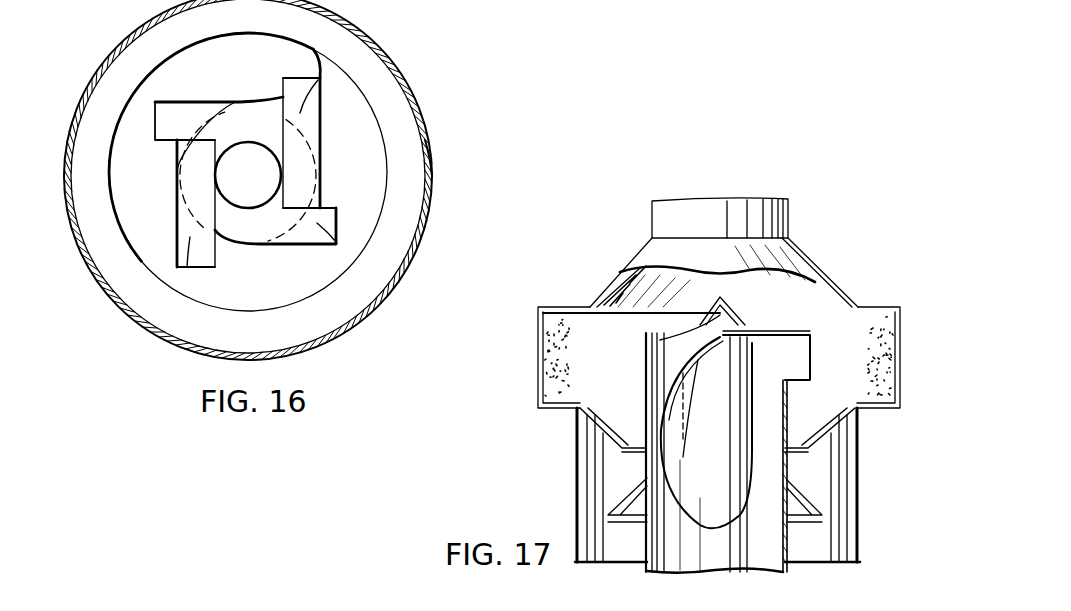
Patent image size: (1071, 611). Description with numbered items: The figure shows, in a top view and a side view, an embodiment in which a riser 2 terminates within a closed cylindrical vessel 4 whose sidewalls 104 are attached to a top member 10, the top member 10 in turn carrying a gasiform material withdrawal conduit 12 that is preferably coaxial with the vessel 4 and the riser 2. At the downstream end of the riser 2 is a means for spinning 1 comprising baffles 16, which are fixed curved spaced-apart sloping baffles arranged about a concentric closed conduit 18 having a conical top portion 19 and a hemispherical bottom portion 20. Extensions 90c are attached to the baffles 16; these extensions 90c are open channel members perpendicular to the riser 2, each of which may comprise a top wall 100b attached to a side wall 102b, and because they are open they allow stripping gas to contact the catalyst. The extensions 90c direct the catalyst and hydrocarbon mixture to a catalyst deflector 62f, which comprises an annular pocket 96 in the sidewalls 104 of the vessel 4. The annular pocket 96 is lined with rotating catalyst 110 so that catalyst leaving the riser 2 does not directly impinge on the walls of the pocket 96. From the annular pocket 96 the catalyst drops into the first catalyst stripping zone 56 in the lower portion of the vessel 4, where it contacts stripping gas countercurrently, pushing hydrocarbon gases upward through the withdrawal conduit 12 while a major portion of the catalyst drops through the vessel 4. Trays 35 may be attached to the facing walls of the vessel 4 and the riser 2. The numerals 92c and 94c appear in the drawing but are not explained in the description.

In FIG. 17, the means for spinning 1 is at (672, 373).
In FIG. 16, the riser 2 is at (321, 193).
In FIG. 17, the riser 2 is at (647, 545).
In FIG. 16, the cylindrical vessel 4 is at (137, 260).
In FIG. 17, the cylindrical vessel 4 is at (857, 543).
In FIG. 17, the top member 10 is at (810, 260).
In FIG. 17, the gasiform material withdrawal conduit 12 is at (789, 222).
In FIG. 17, the baffles 16 is at (695, 325).
In FIG. 16, the concentric closed conduit 18 is at (216, 170).
In FIG. 17, the concentric closed conduit 18 is at (720, 459).
In FIG. 17, the conical top portion 19 is at (722, 275).
In FIG. 17, the hemispherical bottom portion 20 is at (730, 503).
In FIG. 17, the trays 35 is at (582, 458).
In FIG. 17, the first catalyst stripping zone 56 is at (835, 467).
In FIG. 16, the catalyst deflector 62f is at (433, 150).
In FIG. 17, the catalyst deflector 62f is at (892, 306).
In FIG. 16, the extensions 90c is at (177, 101).
In FIG. 17, the extensions 90c is at (787, 333).
In FIG. 17, the channel inlet 92c is at (735, 318).
In FIG. 17, the chamber roof wall 94c is at (812, 337).
In FIG. 16, the annular pocket 96 is at (84, 252).
In FIG. 17, the annular pocket 96 is at (900, 352).
In FIG. 16, the top wall 100b is at (162, 107).
In FIG. 16, the side wall 102b is at (221, 101).
In FIG. 17, the sidewalls 104 is at (857, 488).
In FIG. 17, the rotating catalyst 110 is at (541, 374).